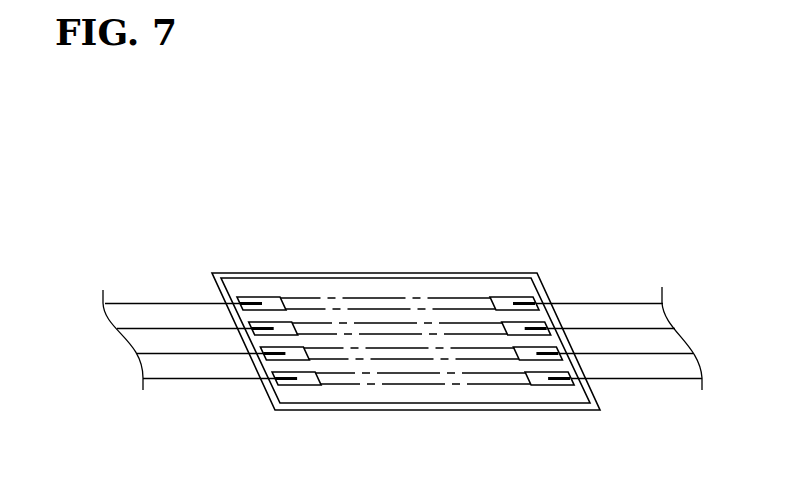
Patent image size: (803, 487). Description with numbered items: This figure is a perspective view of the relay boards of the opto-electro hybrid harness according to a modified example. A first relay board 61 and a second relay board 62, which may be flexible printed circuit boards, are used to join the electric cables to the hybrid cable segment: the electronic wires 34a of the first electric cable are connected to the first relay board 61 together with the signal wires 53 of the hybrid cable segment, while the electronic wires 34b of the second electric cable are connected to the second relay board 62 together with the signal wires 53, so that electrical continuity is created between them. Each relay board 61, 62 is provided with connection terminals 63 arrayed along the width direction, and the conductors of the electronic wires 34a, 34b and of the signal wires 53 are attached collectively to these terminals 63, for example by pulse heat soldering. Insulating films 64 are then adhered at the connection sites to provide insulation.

The electronic wires 34a is at (117, 303).
The electronic wires 34b is at (146, 328).
The signal wires 53 is at (600, 302).
The first relay board 61 is at (370, 273).
The second relay board 62 is at (417, 366).
The connection terminals 63 is at (250, 296).
The insulating films 64 is at (268, 287).